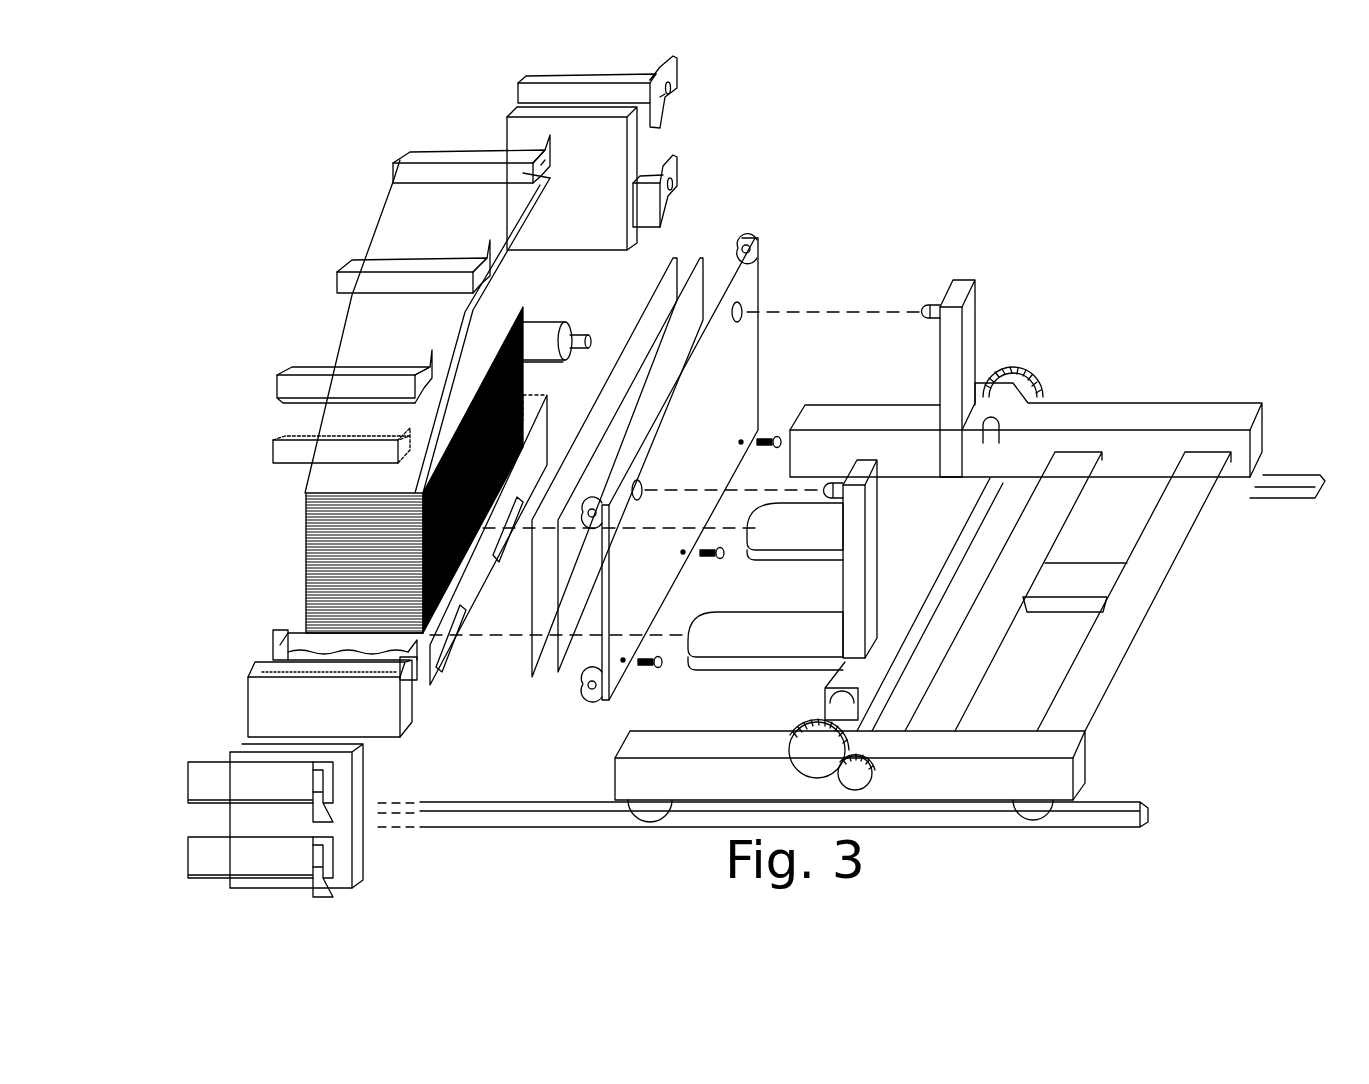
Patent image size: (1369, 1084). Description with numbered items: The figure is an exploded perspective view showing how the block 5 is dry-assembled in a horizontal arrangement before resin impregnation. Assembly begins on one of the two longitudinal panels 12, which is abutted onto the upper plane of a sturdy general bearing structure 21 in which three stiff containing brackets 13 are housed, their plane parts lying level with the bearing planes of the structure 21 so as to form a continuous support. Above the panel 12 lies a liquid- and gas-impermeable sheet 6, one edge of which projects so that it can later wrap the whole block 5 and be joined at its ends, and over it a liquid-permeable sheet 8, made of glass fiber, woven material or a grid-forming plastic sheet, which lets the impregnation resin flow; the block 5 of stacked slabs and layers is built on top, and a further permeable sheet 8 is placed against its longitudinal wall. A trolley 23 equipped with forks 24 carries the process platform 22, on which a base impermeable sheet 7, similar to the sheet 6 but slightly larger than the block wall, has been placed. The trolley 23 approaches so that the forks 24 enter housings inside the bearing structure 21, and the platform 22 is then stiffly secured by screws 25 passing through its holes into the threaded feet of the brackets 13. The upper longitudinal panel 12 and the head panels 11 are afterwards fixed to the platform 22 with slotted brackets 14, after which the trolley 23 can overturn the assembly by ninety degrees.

The block 5 is at (305, 553).
The liquid- and gas-impermeable sheet 6 is at (293, 649).
The base impermeable sheet 7 is at (557, 672).
The liquid-permeable sheet 8 is at (512, 133).
The head panels 11 is at (513, 112).
The longitudinal panel 12 is at (332, 334).
The containing brackets 13 is at (410, 660).
The brackets 14 is at (298, 386).
The general bearing structure 21 is at (248, 705).
The process platform 22 is at (602, 657).
The trolley 23 is at (1092, 403).
The forks 24 is at (915, 503).
The screws 25 is at (653, 662).